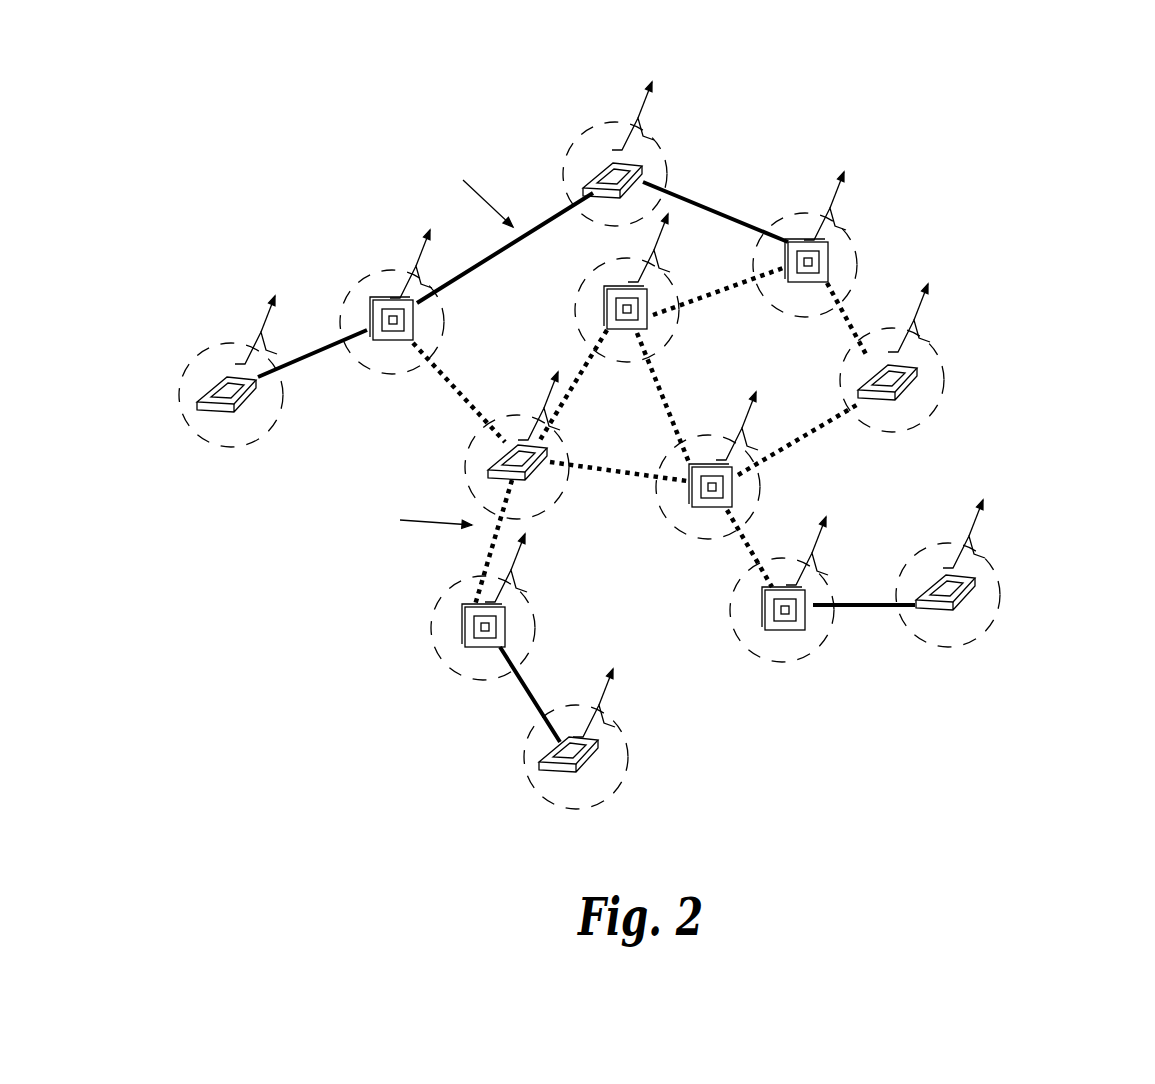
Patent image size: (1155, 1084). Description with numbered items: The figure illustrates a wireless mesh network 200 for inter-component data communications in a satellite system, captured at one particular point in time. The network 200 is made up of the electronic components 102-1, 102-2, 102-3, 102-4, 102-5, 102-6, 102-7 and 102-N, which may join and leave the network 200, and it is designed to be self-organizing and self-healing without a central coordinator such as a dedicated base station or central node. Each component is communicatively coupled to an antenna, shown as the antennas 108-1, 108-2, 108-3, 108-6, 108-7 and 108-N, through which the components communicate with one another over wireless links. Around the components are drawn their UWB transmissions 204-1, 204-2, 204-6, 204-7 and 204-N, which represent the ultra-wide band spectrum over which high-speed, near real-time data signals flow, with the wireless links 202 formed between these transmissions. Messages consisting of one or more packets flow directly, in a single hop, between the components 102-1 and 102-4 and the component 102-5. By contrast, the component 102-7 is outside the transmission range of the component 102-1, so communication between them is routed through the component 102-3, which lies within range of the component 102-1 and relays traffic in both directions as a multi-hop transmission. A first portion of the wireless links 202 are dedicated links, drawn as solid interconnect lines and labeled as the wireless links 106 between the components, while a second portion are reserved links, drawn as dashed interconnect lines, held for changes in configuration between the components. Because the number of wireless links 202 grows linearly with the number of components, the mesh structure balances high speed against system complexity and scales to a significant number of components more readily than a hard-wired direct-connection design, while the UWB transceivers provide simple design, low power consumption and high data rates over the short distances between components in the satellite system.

The wireless mesh network 200 is at (937, 808).
The electronic component 102-1 is at (612, 158).
The electronic component 102-2 is at (807, 240).
The electronic component 102-3 is at (652, 324).
The electronic component 102-4 is at (384, 300).
The electronic component 102-5 is at (230, 372).
The electronic component 102-6 is at (500, 456).
The electronic component 102-7 is at (737, 484).
The electronic component 102-N is at (965, 603).
The antenna 108-1 is at (648, 114).
The antenna 108-2 is at (840, 196).
The antenna 108-3 is at (660, 234).
The antenna 108-6 is at (553, 388).
The antenna 108-7 is at (744, 412).
The antenna 108-N is at (982, 533).
The UWB transmission 204-1 is at (564, 158).
The UWB transmission 204-2 is at (862, 264).
The UWB transmission 204-6 is at (573, 442).
The UWB transmission 204-7 is at (686, 530).
The UWB transmission 204-N is at (1005, 596).
The wireless link 106 is at (707, 208).
The wireless link 202 is at (587, 367).